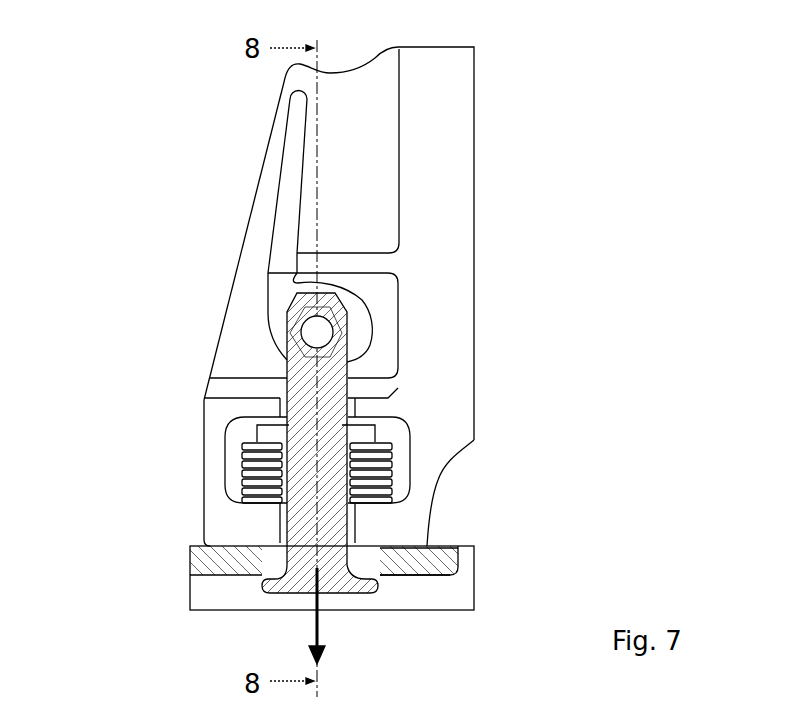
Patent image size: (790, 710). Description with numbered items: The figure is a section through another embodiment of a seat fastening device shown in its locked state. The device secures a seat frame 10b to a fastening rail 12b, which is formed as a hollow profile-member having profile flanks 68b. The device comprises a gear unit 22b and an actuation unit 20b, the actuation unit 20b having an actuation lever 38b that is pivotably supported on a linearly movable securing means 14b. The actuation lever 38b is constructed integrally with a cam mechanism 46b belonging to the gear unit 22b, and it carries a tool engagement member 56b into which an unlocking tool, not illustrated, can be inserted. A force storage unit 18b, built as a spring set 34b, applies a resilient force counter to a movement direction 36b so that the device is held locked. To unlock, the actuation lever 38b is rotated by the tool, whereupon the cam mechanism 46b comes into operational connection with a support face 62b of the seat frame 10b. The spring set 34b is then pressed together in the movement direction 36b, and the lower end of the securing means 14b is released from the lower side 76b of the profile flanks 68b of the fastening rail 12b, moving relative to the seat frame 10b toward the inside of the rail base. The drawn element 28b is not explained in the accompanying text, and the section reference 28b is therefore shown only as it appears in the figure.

The seat frame 10b is at (483, 124).
The fastening rail 12b is at (165, 585).
The securing means 14b is at (297, 378).
The force storage unit 18b is at (198, 467).
The actuation unit 20b is at (276, 172).
The gear unit 22b is at (197, 320).
The support foot 28b is at (474, 433).
The spring set 34b is at (262, 493).
The movement direction 36b is at (313, 632).
The actuation lever 38b is at (288, 198).
The cam mechanism 46b is at (373, 322).
The tool engagement member 56b is at (270, 322).
The support face 62b is at (342, 268).
The profile flanks 68b is at (410, 558).
The lower side 76b is at (392, 593).